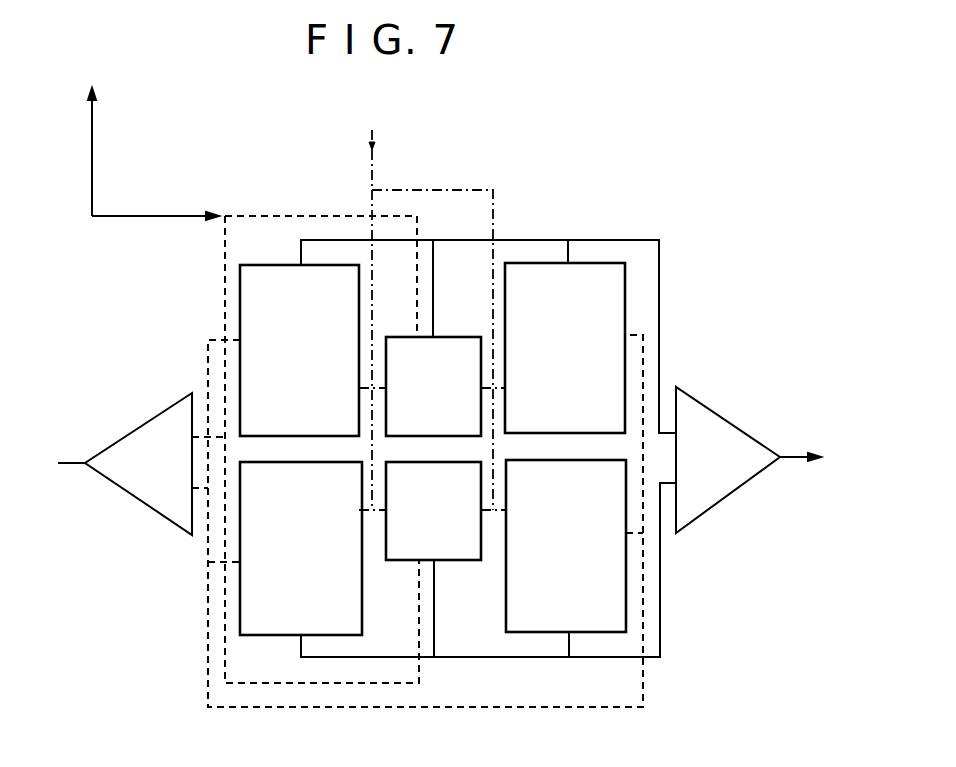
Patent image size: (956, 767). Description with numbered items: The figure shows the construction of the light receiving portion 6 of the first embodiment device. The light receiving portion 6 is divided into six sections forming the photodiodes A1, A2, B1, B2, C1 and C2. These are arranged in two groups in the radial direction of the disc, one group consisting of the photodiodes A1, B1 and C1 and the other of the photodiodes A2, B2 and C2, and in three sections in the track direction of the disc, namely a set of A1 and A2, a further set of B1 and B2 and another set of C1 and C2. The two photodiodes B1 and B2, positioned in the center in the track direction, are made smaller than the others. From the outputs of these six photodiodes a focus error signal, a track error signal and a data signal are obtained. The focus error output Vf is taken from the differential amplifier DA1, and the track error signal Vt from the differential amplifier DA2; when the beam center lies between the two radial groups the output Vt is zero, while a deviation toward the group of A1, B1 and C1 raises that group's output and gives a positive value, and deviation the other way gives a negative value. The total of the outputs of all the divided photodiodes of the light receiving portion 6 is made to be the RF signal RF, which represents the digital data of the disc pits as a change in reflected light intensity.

The light receiving portion 6 is at (568, 222).
The photodiode A1 is at (299, 350).
The photodiode A2 is at (301, 548).
The photodiode B1 is at (433, 386).
The photodiode B2 is at (433, 511).
The photodiode C1 is at (565, 348).
The photodiode C2 is at (566, 546).
The differential amplifier DA1 is at (110, 464).
The differential amplifier DA2 is at (759, 460).
The RF signal RF is at (427, 307).